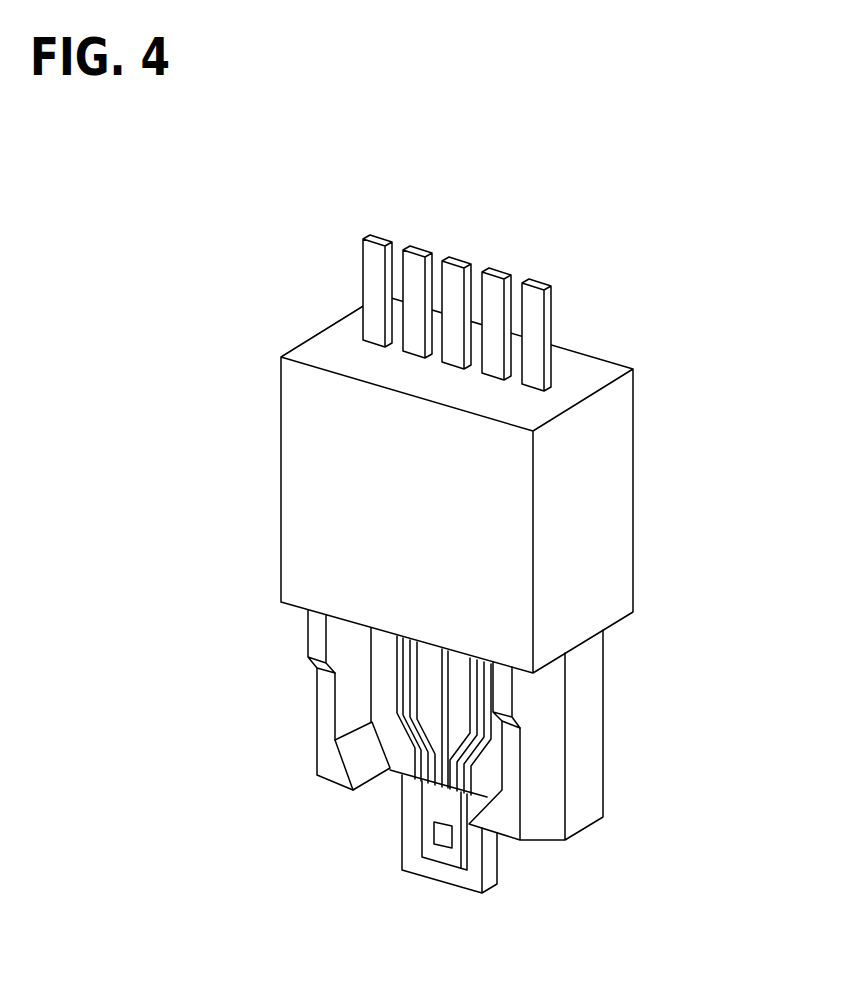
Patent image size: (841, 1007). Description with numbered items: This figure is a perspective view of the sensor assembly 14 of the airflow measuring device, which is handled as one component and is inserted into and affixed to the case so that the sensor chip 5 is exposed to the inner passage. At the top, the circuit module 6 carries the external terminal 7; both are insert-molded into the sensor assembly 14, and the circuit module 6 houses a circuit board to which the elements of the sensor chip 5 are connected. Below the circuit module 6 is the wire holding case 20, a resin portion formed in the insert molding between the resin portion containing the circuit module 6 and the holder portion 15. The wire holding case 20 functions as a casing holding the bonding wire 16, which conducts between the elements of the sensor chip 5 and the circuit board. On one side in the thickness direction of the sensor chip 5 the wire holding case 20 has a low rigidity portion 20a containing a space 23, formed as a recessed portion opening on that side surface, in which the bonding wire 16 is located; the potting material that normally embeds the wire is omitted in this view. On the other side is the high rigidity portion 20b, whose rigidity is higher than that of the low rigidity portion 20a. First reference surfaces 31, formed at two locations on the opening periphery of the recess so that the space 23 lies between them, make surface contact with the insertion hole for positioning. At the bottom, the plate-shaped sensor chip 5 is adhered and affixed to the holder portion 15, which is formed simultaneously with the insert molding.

The sensor assembly 14 is at (642, 262).
The circuit module 6 is at (603, 430).
The external terminal 7 is at (530, 307).
The wire holding case 20 is at (615, 755).
The low rigidity portion 20a is at (318, 702).
The high rigidity portion 20b is at (583, 683).
The first reference surfaces 31 is at (315, 638).
The space 23 is at (333, 758).
The bonding wire 16 is at (397, 716).
The holder portion 15 is at (468, 883).
The sensor chip 5 is at (440, 843).